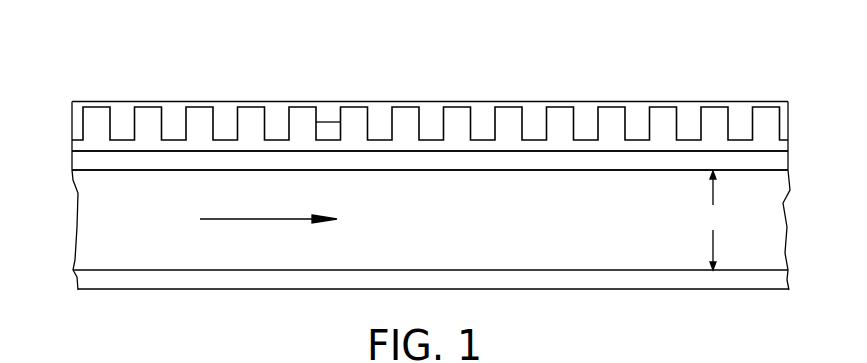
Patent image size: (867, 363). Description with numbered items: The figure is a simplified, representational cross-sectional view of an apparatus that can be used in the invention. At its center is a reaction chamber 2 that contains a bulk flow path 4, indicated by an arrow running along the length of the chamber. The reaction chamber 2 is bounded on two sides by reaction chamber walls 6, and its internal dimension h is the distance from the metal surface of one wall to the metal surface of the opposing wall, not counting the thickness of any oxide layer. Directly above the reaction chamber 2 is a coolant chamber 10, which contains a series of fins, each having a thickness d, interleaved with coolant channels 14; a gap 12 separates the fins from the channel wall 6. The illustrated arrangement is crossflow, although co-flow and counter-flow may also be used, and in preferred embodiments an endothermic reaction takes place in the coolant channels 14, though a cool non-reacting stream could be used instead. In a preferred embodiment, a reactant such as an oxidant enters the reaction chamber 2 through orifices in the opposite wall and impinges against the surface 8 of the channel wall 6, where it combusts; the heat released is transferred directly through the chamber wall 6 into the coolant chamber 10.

The reaction chamber 2 is at (97, 219).
The bulk flow path 4 is at (165, 241).
The reaction chamber wall 6 is at (755, 158).
The surface 8 is at (768, 168).
The coolant chamber 10 is at (788, 118).
The gap 12 is at (117, 147).
The coolant channels 14 is at (402, 127).
The fin thickness d is at (332, 122).
The internal dimension h is at (715, 220).